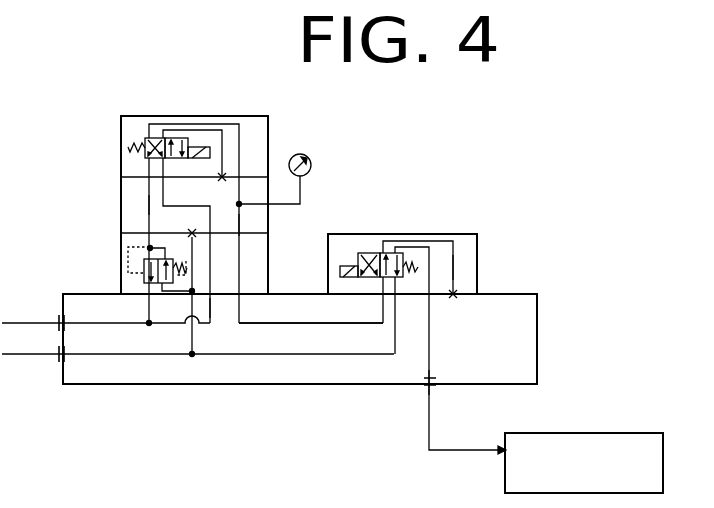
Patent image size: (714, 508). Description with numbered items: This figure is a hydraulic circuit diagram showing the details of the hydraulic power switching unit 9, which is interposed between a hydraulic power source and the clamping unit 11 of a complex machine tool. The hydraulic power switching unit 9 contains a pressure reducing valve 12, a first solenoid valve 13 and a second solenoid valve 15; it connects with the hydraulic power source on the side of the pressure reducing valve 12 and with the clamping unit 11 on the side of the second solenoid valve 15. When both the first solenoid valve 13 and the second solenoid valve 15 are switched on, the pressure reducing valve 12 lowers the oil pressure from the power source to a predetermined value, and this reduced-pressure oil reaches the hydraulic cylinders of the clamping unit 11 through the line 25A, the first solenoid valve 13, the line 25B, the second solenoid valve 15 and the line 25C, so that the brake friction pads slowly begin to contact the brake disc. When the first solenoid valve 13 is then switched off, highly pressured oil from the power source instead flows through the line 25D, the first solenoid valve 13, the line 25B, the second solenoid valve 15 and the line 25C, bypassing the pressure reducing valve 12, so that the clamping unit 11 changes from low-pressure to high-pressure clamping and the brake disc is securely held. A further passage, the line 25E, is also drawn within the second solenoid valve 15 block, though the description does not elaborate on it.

The hydraulic power switching unit 9 is at (243, 92).
The first solenoid valve 13 is at (131, 120).
The pressure reducing valve 12 is at (128, 280).
The second solenoid valve 15 is at (366, 247).
The clamping unit 11 is at (603, 433).
The line 25A is at (149, 204).
The line 25B is at (242, 225).
The line 25C is at (443, 406).
The line 25D is at (212, 308).
The fluid passage 25E is at (455, 268).